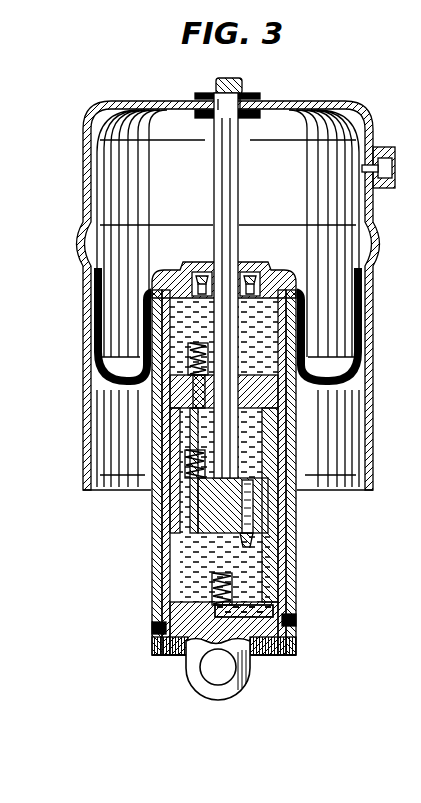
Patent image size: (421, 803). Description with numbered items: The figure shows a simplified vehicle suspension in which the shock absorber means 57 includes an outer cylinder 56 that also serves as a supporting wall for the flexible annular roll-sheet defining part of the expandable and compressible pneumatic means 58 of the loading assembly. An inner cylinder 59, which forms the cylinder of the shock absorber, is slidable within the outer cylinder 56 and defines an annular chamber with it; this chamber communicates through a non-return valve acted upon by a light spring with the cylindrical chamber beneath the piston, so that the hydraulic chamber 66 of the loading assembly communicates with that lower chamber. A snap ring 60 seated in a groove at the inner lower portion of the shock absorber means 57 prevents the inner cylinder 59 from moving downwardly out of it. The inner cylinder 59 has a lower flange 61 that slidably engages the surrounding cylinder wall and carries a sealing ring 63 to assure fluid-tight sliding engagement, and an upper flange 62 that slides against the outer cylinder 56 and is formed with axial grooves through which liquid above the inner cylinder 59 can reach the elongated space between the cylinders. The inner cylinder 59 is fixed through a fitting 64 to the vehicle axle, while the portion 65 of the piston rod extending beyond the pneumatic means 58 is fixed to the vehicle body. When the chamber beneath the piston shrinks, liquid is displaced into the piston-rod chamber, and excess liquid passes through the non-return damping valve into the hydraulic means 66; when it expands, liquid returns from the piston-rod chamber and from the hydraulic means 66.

The outer cylinder 56 is at (297, 578).
The shock absorber means 57 is at (300, 532).
The expandable and compressible pneumatic means 58 is at (96, 182).
The inner cylinder 59 is at (174, 510).
The snap ring 60 is at (294, 651).
The lower flange 61 is at (152, 630).
The upper flange 62 is at (283, 400).
The sealing ring 63 is at (291, 618).
The fitting 64 is at (197, 686).
The portion of the piston rod 65 is at (219, 86).
The hydraulic chamber 66 is at (164, 546).